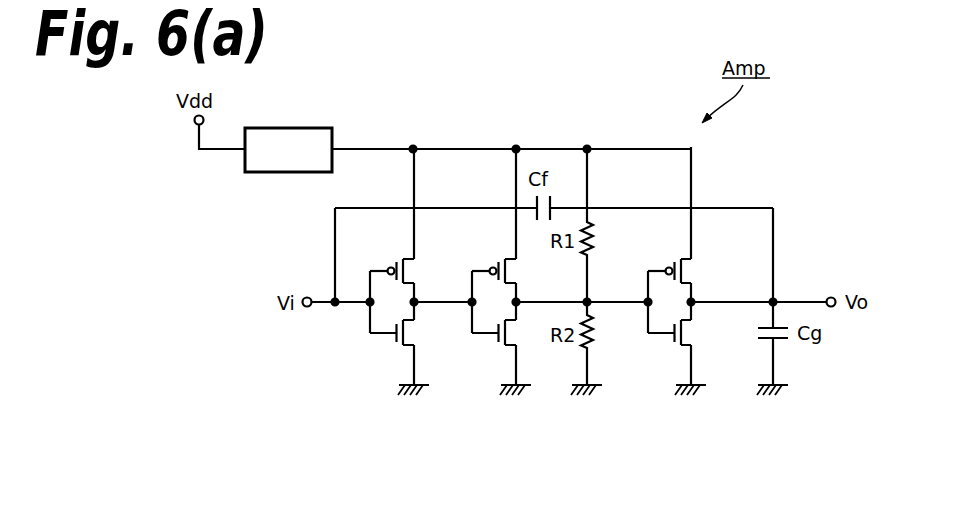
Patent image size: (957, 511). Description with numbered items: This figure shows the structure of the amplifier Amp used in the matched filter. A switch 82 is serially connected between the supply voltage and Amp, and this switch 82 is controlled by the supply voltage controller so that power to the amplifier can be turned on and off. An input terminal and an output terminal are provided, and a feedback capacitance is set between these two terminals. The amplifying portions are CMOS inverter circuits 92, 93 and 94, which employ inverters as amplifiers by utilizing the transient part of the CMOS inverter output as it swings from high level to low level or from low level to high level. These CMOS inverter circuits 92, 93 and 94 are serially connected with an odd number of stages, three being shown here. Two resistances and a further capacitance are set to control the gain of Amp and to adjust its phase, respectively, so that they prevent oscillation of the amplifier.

The switch 82 is at (291, 128).
The CMOS inverter circuit 92 is at (380, 260).
The CMOS inverter circuit 93 is at (483, 259).
The CMOS inverter circuit 94 is at (666, 257).